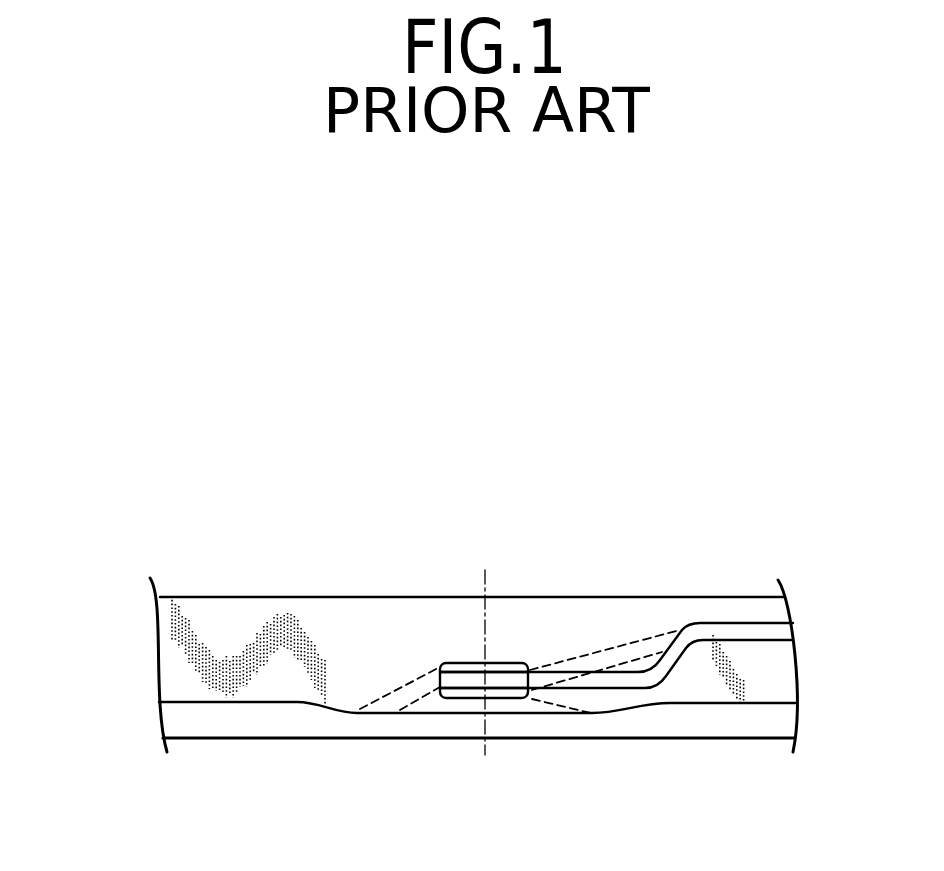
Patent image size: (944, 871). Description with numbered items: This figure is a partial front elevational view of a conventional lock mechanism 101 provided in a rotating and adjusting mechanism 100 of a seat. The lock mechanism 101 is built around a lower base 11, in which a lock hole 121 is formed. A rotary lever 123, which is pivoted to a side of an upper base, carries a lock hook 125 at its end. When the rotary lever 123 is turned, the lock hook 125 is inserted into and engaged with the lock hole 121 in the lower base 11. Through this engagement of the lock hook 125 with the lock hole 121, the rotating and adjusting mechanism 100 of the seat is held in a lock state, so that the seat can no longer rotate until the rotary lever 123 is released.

The rotating and adjusting mechanism 100 is at (128, 551).
The lock mechanism 101 is at (365, 490).
The lower base 11 is at (257, 613).
The lock hole 121 is at (512, 662).
The rotary lever 123 is at (747, 630).
The lock hook 125 is at (500, 683).